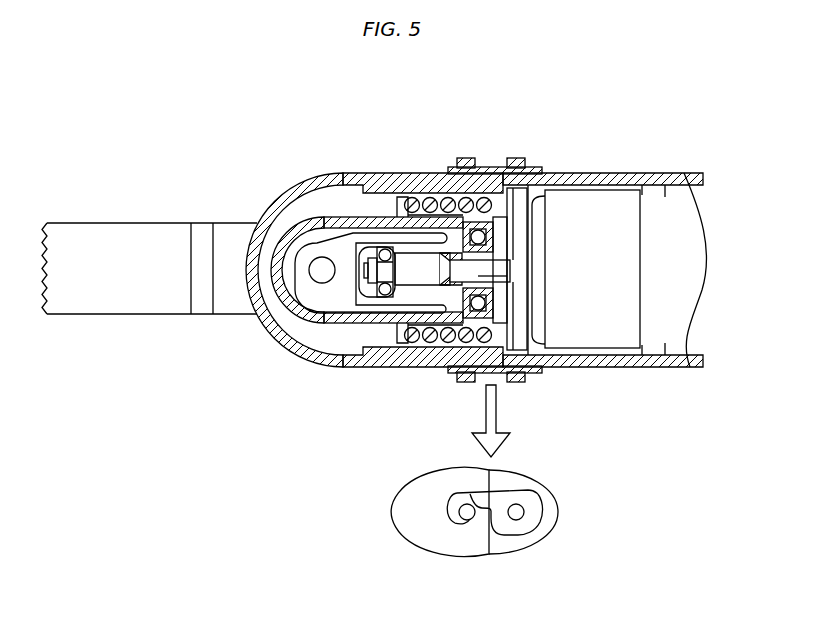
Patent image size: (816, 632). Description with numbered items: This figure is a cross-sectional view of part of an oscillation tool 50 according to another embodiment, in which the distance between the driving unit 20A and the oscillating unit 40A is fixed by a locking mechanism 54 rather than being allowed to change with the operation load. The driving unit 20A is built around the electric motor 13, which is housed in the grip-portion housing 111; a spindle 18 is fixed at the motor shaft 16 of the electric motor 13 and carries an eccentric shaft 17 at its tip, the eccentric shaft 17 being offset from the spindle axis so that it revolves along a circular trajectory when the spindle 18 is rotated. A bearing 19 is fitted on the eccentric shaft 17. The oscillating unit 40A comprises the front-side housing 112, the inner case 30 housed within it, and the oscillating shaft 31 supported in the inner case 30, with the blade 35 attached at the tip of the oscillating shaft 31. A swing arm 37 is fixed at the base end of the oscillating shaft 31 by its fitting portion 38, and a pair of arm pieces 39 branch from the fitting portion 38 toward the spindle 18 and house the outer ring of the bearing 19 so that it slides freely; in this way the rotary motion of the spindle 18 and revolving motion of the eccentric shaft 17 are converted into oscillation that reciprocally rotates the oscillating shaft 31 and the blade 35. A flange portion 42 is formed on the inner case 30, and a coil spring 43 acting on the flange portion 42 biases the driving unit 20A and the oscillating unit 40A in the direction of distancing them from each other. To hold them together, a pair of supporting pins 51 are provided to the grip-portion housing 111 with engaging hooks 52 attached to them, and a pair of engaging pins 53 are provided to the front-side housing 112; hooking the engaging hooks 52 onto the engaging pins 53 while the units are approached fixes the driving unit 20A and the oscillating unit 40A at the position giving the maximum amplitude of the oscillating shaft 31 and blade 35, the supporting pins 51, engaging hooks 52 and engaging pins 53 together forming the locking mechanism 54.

The oscillation tool 50 is at (206, 128).
The blade 35 is at (120, 223).
The oscillating unit 40A is at (250, 225).
The front-side housing 112 is at (275, 197).
The grip-portion housing 111 is at (641, 173).
The driving unit 20A is at (688, 220).
The oscillating shaft 31 is at (272, 315).
The inner case 30 is at (317, 330).
The swing arm 37 is at (292, 108).
The fitting portion 38 is at (328, 243).
The arm pieces 39 is at (397, 238).
The bearing 19 is at (386, 298).
The eccentric shaft 17 is at (369, 285).
The flange portion 42 is at (404, 234).
The spindle 18 is at (421, 276).
The motor shaft 16 is at (513, 270).
The coil spring 43 is at (430, 197).
The locking mechanism 54 is at (546, 151).
The engaging hooks 52 is at (498, 167).
The engaging pins 53 is at (467, 158).
The supporting pins 51 is at (517, 158).
The electric motor 13 is at (622, 295).